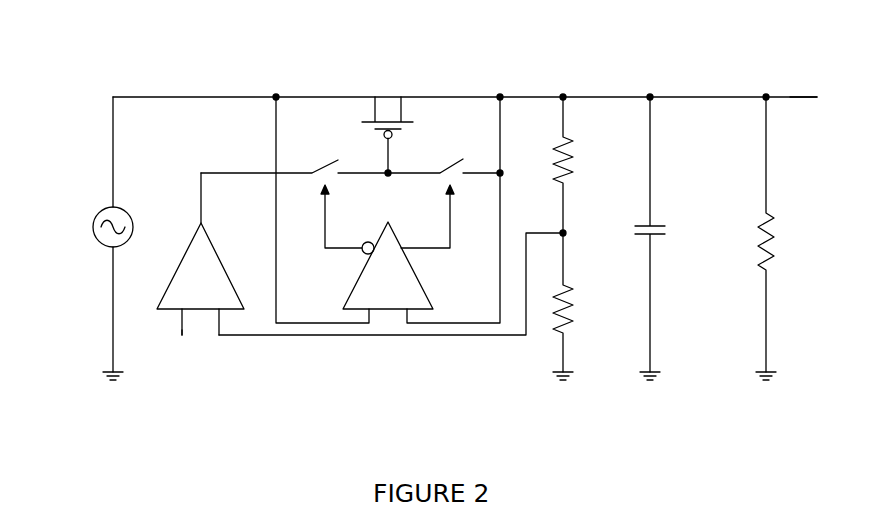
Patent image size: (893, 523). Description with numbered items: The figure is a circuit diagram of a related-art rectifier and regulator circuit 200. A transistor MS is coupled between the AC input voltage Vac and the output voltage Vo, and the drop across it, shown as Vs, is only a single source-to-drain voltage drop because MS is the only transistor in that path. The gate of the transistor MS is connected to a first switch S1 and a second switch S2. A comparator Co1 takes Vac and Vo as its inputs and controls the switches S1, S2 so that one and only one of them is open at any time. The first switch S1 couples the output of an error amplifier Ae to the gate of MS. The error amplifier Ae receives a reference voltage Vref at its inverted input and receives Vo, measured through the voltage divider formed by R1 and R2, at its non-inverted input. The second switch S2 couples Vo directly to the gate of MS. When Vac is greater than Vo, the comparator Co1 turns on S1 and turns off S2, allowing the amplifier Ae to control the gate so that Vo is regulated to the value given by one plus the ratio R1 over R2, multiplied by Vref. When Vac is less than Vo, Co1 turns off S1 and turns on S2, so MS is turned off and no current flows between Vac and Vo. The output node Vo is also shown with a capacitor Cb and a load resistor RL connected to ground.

The rectifier and regulator circuit 200 is at (226, 425).
The input AC voltage Vac is at (80, 238).
The voltage drop between Vac and Vo Vs is at (388, 24).
The transistor MS is at (387, 118).
The first switch S1 is at (294, 173).
The second switch S2 is at (445, 150).
The error amplifier Ae is at (200, 279).
The reference voltage Vref is at (183, 346).
The comparator Co1 is at (387, 247).
The voltage divider resistor R1 is at (578, 166).
The voltage divider resistor R2 is at (578, 306).
The output capacitor Cb is at (662, 238).
The load resistor RL is at (753, 238).
The output voltage Vo is at (818, 95).